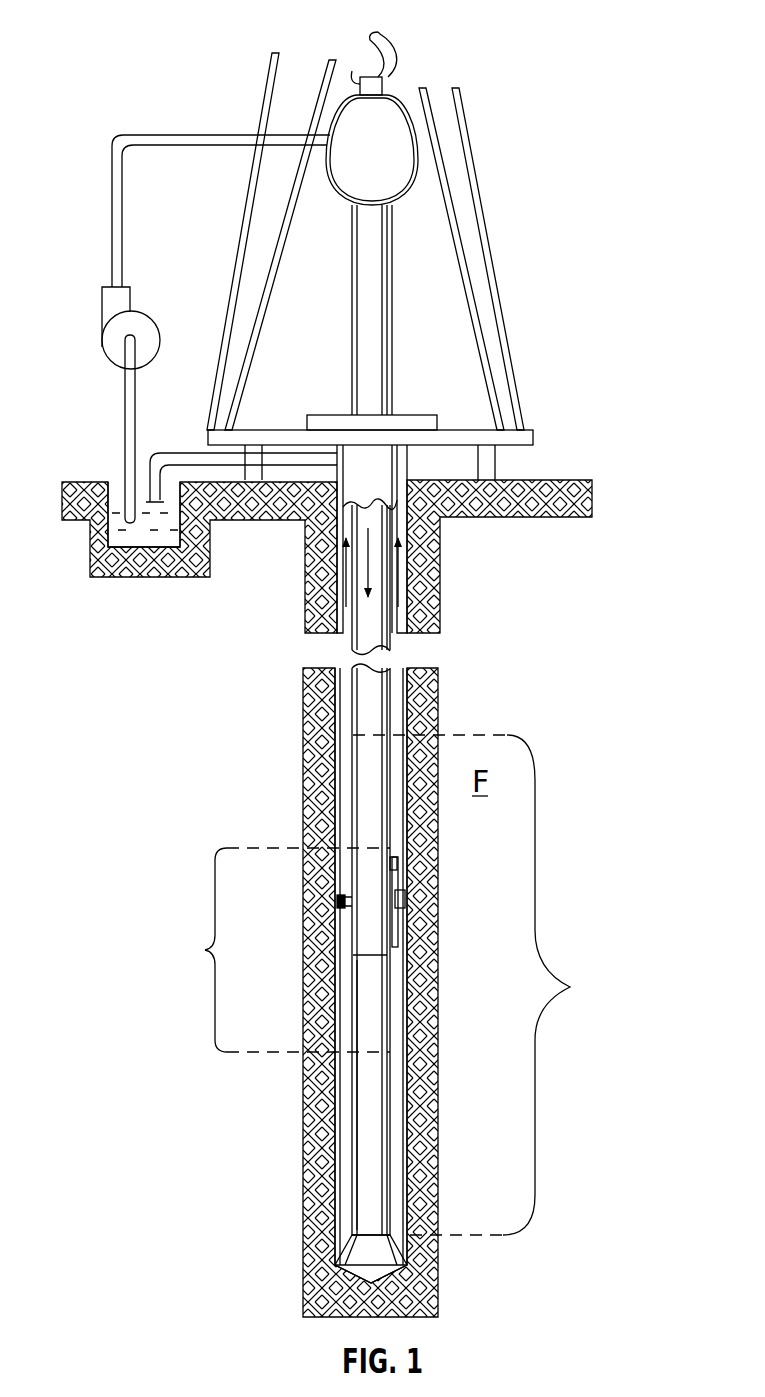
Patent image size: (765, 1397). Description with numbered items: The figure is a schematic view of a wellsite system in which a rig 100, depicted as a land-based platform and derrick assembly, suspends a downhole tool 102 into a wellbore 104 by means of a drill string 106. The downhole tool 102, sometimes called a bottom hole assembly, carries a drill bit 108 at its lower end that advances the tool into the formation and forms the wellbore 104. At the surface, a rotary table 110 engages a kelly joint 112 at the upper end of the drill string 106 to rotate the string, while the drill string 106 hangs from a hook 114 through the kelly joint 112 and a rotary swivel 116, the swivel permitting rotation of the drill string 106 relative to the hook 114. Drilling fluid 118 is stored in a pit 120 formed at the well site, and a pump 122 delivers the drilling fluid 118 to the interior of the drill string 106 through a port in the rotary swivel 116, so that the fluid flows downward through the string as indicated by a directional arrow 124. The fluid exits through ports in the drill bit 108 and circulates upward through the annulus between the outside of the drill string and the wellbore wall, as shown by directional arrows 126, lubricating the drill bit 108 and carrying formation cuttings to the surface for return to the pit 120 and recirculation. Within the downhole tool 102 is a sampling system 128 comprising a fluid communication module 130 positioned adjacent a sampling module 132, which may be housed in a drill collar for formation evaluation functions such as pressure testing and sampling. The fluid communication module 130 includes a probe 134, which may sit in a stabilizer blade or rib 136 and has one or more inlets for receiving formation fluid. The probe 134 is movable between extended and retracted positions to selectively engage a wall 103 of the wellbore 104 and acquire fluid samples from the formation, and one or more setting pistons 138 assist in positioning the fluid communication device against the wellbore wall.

The rig 100 is at (127, 30).
The downhole tool 102 is at (339, 898).
The wall 103 is at (404, 636).
The wellbore 104 is at (396, 708).
The drill string 106 is at (370, 690).
The drill bit 108 is at (360, 1258).
The rotary table 110 is at (397, 413).
The kelly joint 112 is at (372, 275).
The hook 114 is at (380, 33).
The rotary swivel 116 is at (342, 198).
The drilling fluid 118 is at (142, 570).
The pit 120 is at (107, 533).
The pump 122 is at (117, 358).
The directional arrow 124 is at (368, 568).
The directional arrows 126 is at (400, 555).
The sampling system 128 is at (274, 950).
The fluid communication module 130 is at (363, 952).
The sampling module 132 is at (363, 987).
The probe 134 is at (402, 903).
The stabilizer blade or rib 136 is at (395, 873).
The setting pistons 138 is at (340, 900).